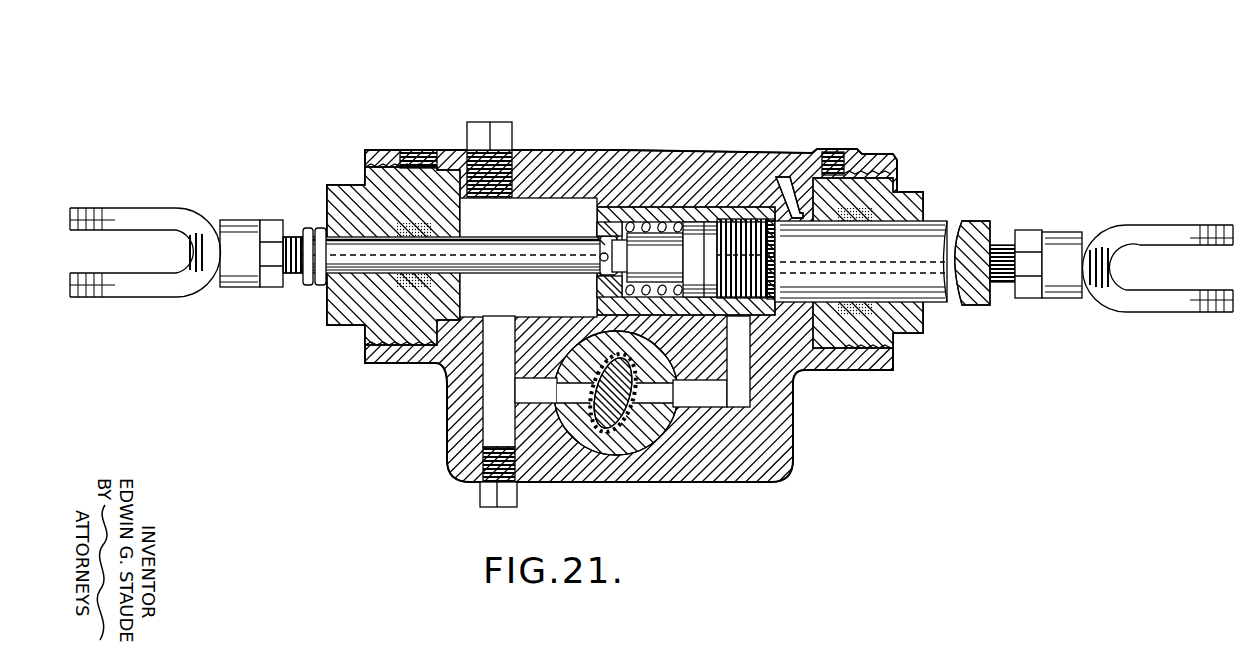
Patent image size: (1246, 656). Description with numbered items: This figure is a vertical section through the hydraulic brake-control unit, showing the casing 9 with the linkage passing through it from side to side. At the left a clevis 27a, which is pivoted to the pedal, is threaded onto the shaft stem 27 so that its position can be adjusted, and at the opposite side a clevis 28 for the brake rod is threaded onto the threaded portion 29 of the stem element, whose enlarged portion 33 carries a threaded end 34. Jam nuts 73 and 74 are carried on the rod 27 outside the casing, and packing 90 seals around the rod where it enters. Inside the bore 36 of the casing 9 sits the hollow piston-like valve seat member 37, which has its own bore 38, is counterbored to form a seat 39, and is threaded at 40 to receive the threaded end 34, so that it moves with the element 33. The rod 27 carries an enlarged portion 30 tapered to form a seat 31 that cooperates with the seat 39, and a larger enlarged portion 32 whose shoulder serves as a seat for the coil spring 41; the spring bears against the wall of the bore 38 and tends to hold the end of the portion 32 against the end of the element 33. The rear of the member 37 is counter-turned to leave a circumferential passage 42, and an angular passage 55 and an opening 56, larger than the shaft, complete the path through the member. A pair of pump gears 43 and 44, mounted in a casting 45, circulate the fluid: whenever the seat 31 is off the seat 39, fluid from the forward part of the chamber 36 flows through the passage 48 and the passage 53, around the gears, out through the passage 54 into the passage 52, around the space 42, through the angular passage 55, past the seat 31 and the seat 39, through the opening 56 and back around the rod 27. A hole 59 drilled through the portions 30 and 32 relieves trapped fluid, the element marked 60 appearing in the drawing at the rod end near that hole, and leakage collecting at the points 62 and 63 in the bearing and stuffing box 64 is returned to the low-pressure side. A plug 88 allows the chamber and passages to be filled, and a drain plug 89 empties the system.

The casing 9 is at (575, 150).
The shaft stem 27 is at (355, 265).
The clevis 27a is at (153, 208).
The clevis 28 is at (1133, 228).
The threaded portion 29 is at (1003, 245).
The enlarged portion 30 is at (663, 245).
The seat 31 is at (600, 291).
The enlarged portion 32 is at (743, 230).
The enlarged portion of stem element 33 is at (935, 230).
The threaded end 34 is at (742, 254).
The bore 36 is at (534, 208).
The hollow piston-like valve seat member 37 is at (659, 235).
The bore 38 is at (645, 222).
The seat 39 is at (608, 222).
The threads 40 is at (760, 207).
The coil spring 41 is at (637, 222).
The passage 42 is at (707, 243).
The pump gear 43 is at (634, 390).
The pump gear 44 is at (623, 427).
The casting 45 is at (602, 445).
The passage 48 is at (494, 408).
The passage 52 is at (745, 397).
The passage 53 is at (541, 398).
The passage 54 is at (707, 397).
The angular passage 55 is at (678, 222).
The opening 56 is at (597, 280).
The hole 59 is at (597, 236).
The pin 60 is at (600, 257).
The leakage point 62 is at (787, 178).
The leakage point 63 is at (798, 216).
The bearing and stuffing box 64 is at (855, 212).
The jam nut 73 is at (307, 288).
The jam nut 74 is at (318, 288).
The plug 88 is at (488, 150).
The drain plug 89 is at (482, 490).
The packing 90 is at (404, 222).